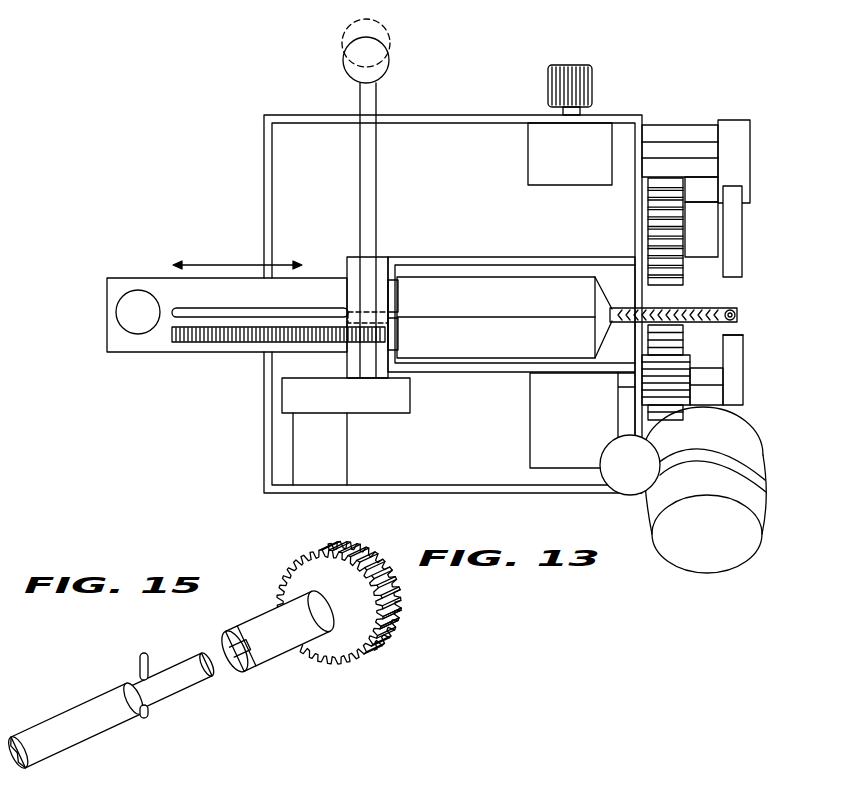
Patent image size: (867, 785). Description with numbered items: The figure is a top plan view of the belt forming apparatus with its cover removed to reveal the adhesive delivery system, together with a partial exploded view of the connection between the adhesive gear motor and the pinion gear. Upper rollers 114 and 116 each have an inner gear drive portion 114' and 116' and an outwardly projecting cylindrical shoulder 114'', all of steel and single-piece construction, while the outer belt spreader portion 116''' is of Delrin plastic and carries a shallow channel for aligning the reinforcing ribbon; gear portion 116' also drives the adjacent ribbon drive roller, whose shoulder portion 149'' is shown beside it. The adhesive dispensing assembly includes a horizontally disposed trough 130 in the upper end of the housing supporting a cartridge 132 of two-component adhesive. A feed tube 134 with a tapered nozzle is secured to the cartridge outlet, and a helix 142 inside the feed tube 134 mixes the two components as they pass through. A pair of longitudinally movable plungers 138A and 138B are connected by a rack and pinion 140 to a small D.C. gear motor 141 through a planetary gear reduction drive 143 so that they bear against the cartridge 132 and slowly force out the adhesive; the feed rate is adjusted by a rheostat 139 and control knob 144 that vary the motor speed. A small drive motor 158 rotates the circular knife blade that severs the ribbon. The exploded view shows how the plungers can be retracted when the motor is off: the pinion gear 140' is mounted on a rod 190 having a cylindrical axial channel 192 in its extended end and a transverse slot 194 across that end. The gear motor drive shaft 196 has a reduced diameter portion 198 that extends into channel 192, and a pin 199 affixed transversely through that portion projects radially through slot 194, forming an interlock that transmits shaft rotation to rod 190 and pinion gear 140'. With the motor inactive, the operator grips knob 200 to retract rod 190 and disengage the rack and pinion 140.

In FIG. 13, the upper roller 114 is at (762, 231).
In FIG. 13, the inner gear drive portion 114' is at (621, 236).
In FIG. 13, the cylindrical shoulder 114'' is at (718, 193).
In FIG. 13, the upper roller 116 is at (727, 379).
In FIG. 13, the inner gear drive portion 116' is at (730, 333).
In FIG. 13, the outer belt spreader portion 116''' is at (783, 387).
In FIG. 13, the trough 130 is at (467, 367).
In FIG. 13, the cartridge 132 is at (455, 275).
In FIG. 13, the feed tube 134 is at (600, 330).
In FIG. 13, the plunger 138A is at (398, 293).
In FIG. 13, the plunger 138B is at (398, 347).
In FIG. 13, the rheostat 139 is at (603, 145).
In FIG. 13, the rack and pinion 140 is at (328, 284).
In FIG. 13, the pinion gear 140' is at (247, 326).
In FIG. 15, the pinion gear 140' is at (382, 656).
In FIG. 13, the gear motor 141 is at (338, 462).
In FIG. 13, the helix 142 is at (708, 313).
In FIG. 13, the planetary gear reduction drive 143 is at (292, 397).
In FIG. 13, the control knob 144 is at (590, 73).
In FIG. 13, the shoulder portion of ribbon drive roller 149'' is at (760, 370).
In FIG. 13, the drive motor 158 is at (675, 560).
In FIG. 13, the rod 190 is at (375, 180).
In FIG. 15, the rod 190 is at (375, 600).
In FIG. 15, the cylindrical axial channel 192 is at (225, 673).
In FIG. 15, the transverse slot 194 is at (232, 622).
In FIG. 15, the gear motor drive shaft 196 is at (105, 720).
In FIG. 15, the reduced diameter portion 198 is at (178, 682).
In FIG. 15, the pin 199 is at (138, 658).
In FIG. 13, the gripping knob 200 is at (388, 72).